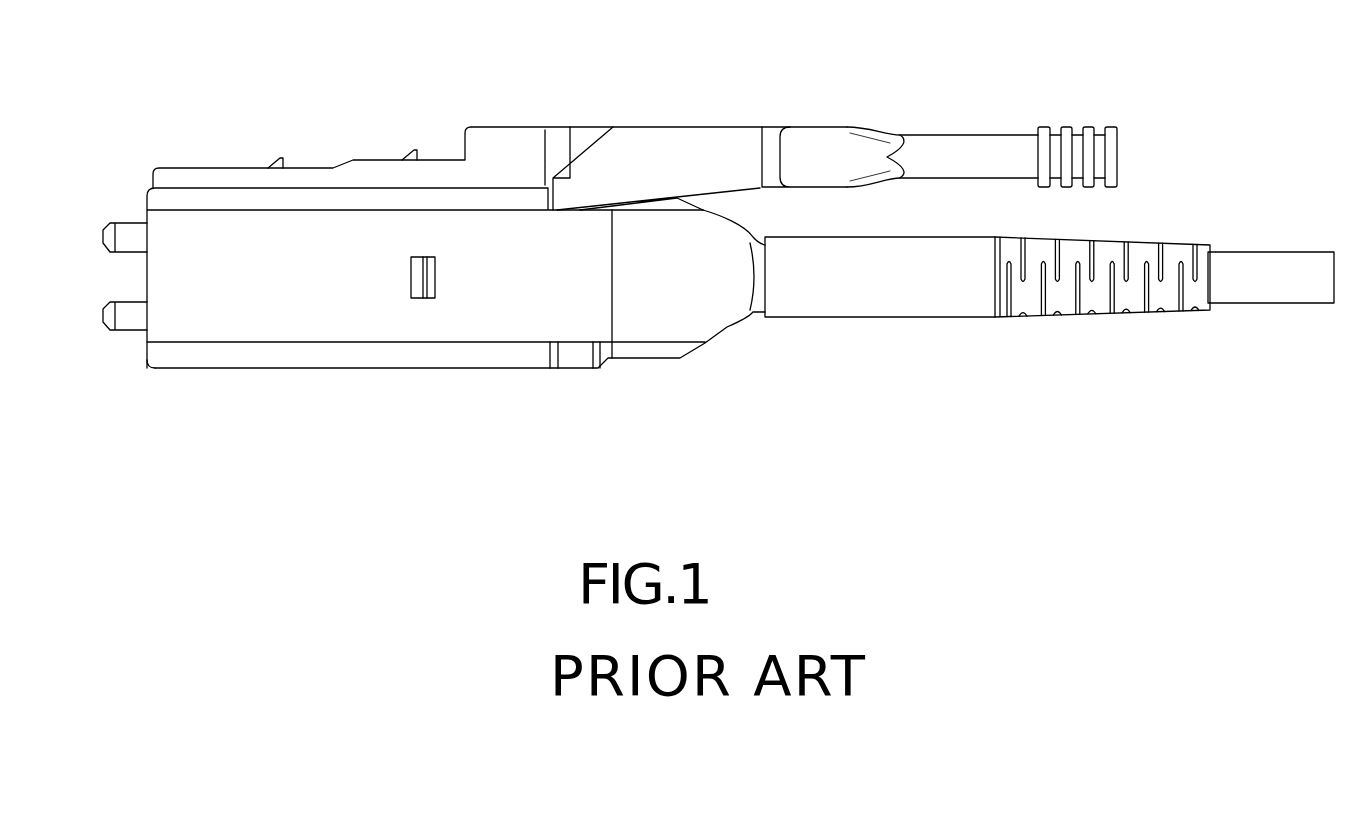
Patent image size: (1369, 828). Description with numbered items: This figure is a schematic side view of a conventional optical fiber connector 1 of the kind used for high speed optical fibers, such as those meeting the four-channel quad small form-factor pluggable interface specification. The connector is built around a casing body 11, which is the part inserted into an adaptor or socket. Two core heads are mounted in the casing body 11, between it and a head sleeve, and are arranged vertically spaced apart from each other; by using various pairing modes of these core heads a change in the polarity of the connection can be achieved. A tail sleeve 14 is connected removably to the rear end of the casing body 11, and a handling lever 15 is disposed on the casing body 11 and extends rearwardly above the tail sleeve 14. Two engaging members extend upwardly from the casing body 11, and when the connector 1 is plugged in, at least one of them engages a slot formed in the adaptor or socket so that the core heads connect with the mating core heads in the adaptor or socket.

The optical fiber connector 1 is at (700, 288).
The casing body 11 is at (265, 335).
The tail sleeve 14 is at (727, 327).
The handling lever 15 is at (972, 148).